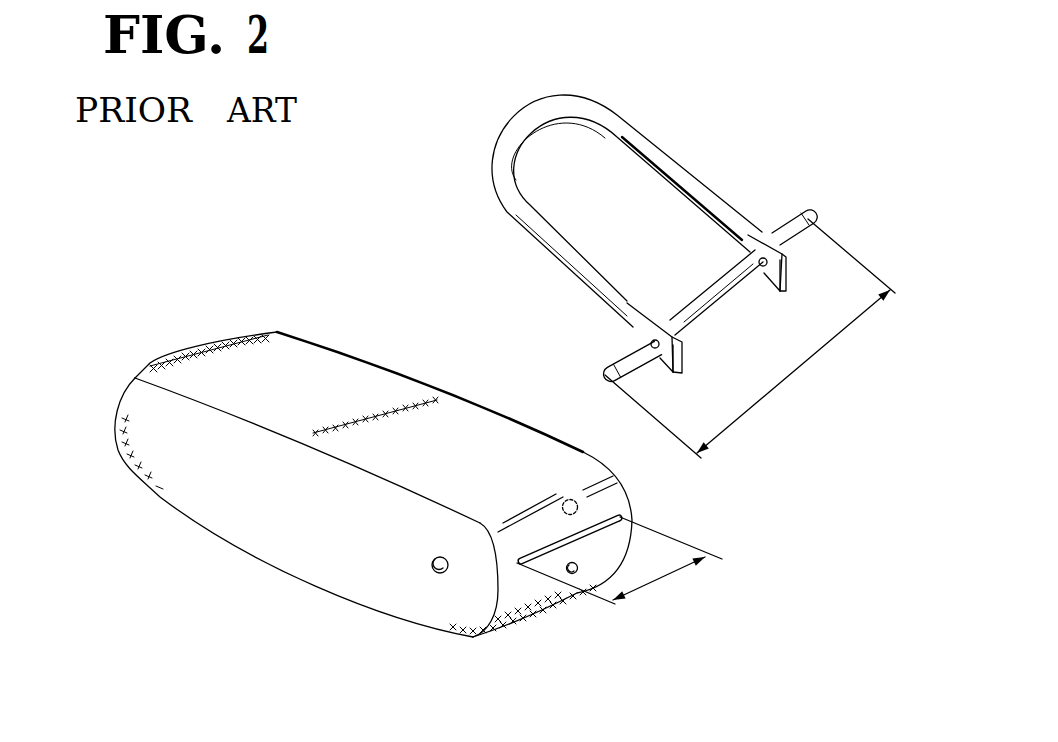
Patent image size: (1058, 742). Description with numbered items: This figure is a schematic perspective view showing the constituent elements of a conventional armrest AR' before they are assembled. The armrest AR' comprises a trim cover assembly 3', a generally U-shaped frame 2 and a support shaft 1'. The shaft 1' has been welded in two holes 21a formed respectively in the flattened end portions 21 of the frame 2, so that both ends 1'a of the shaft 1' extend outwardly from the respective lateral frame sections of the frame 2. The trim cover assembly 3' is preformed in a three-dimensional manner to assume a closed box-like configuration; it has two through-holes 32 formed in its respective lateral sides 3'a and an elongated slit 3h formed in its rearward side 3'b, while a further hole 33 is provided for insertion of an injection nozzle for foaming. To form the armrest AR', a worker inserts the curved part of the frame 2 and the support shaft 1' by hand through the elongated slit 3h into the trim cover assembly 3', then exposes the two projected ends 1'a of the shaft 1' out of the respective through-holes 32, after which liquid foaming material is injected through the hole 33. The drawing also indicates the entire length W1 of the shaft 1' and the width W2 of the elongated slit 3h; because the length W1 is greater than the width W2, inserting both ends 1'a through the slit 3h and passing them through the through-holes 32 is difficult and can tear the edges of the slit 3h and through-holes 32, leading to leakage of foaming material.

The conventional armrest AR' is at (505, 408).
The trim cover assembly 3' is at (373, 501).
The lateral sides 3'a is at (316, 473).
The rearward side 3'b is at (523, 653).
The elongated slit 3h is at (617, 517).
The through-holes 32 is at (573, 499).
The hole 33 is at (573, 580).
The U-shaped frame 2 is at (523, 230).
The flattened end portions 21 is at (745, 250).
The holes 21a is at (767, 272).
The support shaft 1' is at (709, 292).
The shaft ends 1'a is at (678, 247).
The entire length of shaft W1 is at (750, 338).
The width of elongated hole W2 is at (619, 567).